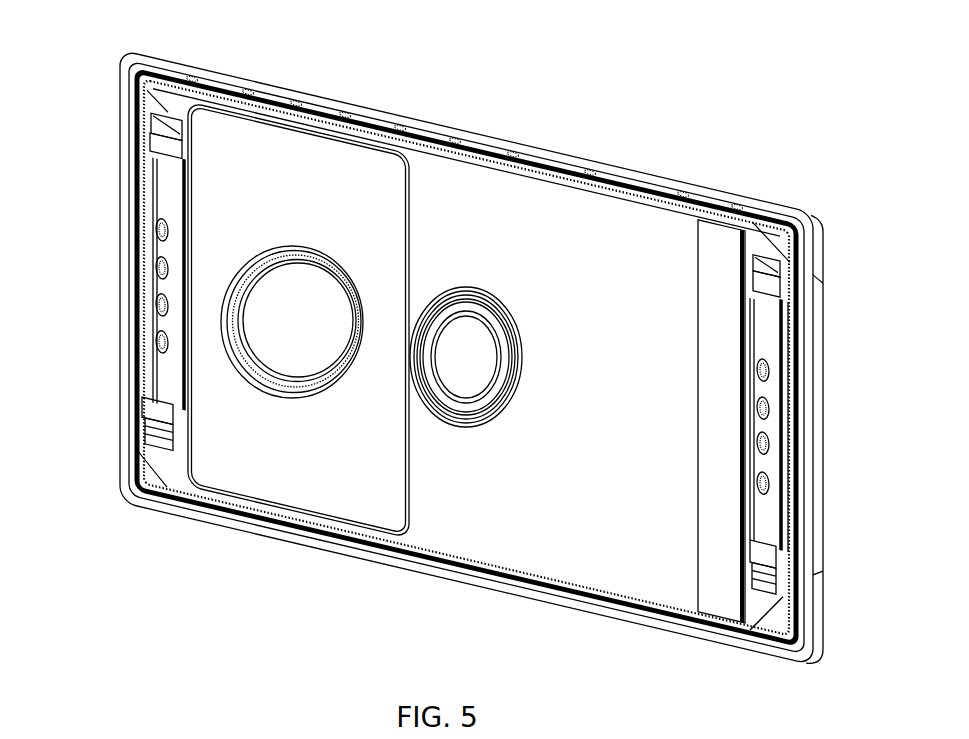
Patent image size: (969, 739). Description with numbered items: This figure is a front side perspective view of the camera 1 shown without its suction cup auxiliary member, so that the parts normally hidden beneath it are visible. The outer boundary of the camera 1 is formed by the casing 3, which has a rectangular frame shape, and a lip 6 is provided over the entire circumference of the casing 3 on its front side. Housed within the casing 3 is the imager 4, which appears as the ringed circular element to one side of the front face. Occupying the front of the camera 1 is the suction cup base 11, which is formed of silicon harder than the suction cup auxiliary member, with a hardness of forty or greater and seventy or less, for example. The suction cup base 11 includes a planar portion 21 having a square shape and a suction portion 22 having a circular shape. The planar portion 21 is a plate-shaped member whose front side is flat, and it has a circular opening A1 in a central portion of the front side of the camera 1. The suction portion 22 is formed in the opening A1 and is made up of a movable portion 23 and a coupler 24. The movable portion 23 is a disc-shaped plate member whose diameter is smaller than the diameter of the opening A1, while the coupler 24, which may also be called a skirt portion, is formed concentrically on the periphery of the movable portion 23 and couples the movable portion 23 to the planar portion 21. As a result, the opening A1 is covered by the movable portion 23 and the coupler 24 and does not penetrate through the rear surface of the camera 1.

The camera 1 is at (502, 107).
The casing 3 is at (711, 184).
The imager 4 is at (458, 352).
The lip 6 is at (655, 186).
The suction cup base 11 is at (222, 450).
The planar portion 21 is at (262, 148).
The suction portion 22 is at (223, 206).
The movable portion 23 is at (287, 338).
The coupler 24 is at (328, 377).
The opening A1 is at (363, 345).